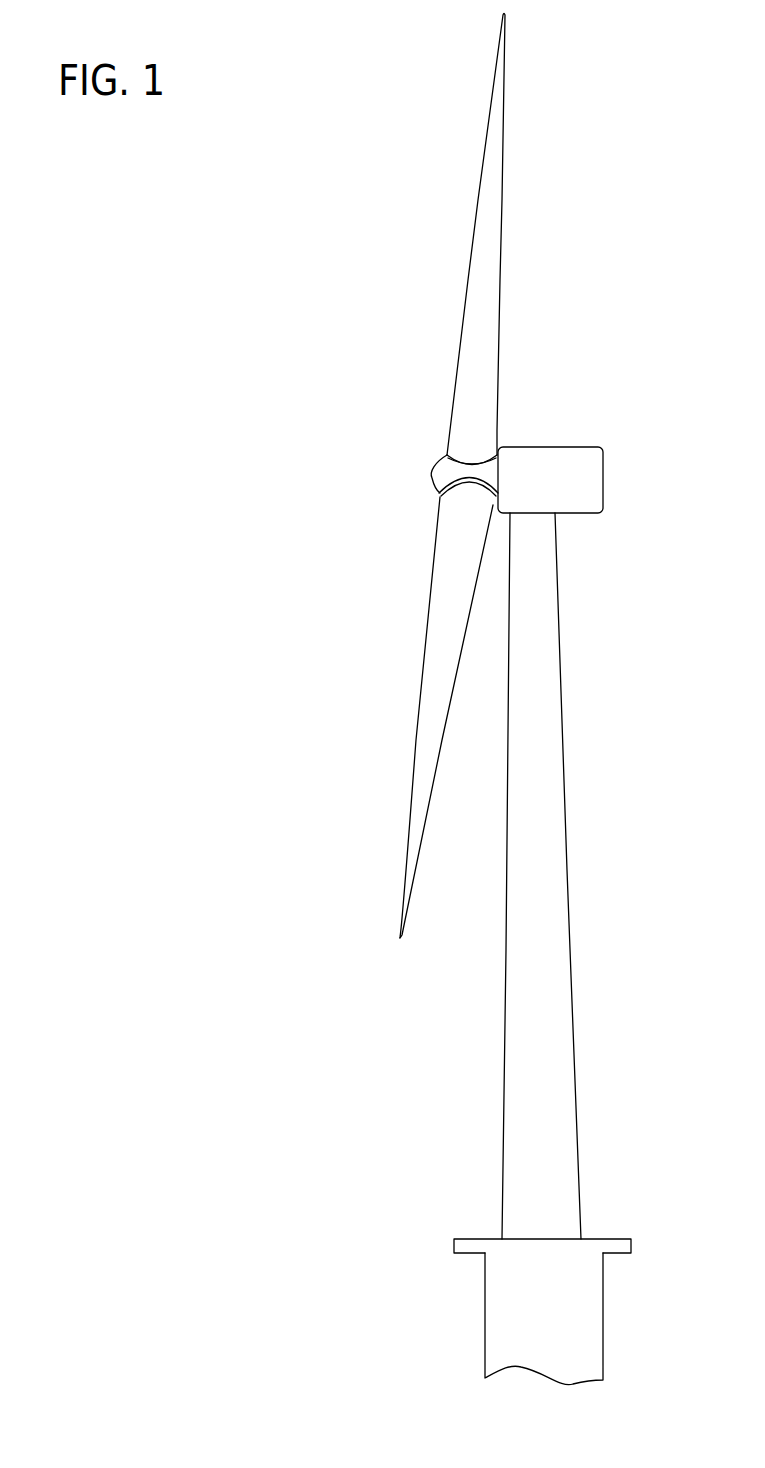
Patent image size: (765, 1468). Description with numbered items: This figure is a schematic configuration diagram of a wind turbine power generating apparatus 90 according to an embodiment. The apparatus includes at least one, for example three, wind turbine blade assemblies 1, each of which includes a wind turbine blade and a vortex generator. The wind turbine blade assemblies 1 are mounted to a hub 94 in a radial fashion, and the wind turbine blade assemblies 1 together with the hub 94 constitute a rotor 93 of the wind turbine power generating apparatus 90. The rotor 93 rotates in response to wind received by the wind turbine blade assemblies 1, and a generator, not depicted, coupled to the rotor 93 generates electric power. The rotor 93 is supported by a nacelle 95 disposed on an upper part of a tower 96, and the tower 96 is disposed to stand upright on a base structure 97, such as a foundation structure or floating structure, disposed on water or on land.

The wind turbine power generating apparatus 90 is at (671, 135).
The rotor 93 is at (378, 440).
The wind turbine blade assembly 1 is at (481, 172).
The hub 94 is at (436, 477).
The nacelle 95 is at (603, 477).
The tower 96 is at (567, 875).
The base structure 97 is at (603, 1320).